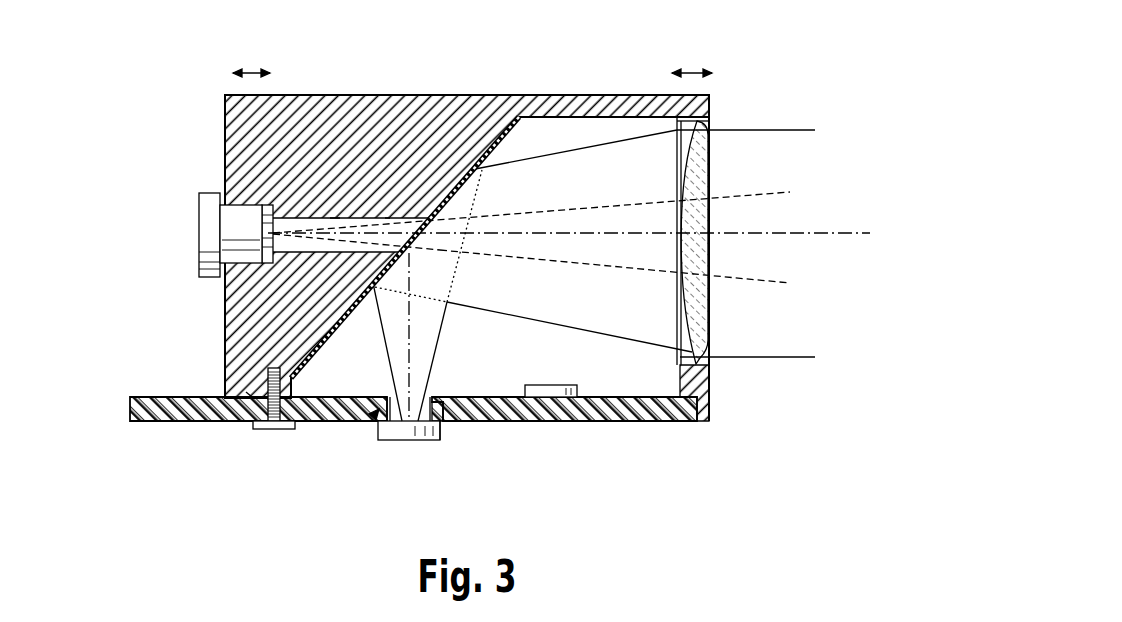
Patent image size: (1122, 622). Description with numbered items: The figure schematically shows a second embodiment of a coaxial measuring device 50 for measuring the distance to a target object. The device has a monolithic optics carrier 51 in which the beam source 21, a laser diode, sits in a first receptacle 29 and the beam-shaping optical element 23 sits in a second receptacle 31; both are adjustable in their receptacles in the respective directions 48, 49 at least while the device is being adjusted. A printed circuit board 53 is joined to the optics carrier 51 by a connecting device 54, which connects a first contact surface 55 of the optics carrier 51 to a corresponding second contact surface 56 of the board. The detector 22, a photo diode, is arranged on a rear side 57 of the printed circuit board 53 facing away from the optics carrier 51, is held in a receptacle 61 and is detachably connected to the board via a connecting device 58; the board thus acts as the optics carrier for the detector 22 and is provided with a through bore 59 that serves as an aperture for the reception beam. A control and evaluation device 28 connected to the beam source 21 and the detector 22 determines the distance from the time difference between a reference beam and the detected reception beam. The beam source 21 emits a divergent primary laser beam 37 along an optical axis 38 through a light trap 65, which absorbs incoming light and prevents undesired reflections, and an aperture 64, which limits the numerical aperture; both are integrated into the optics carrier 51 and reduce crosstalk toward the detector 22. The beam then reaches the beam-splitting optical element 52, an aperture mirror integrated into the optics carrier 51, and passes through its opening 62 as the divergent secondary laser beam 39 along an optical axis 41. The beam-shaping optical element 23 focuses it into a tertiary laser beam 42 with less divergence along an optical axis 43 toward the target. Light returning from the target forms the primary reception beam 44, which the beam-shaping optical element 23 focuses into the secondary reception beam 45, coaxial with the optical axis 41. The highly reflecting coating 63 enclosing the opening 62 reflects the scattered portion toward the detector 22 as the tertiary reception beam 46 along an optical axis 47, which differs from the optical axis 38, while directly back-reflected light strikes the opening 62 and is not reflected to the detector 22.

The beam source 21 is at (207, 222).
The detector 22 is at (407, 437).
The beam-shaping optical element 23 is at (703, 308).
The control and evaluation device 28 is at (550, 390).
The first receptacle 29 is at (240, 200).
The second receptacle 31 is at (695, 380).
The primary laser beam 37 is at (313, 228).
The optical axis 38 is at (345, 235).
The secondary laser beam 39 is at (630, 275).
The optical axis 41 is at (573, 235).
The tertiary laser beam 42 is at (758, 195).
The optical axis 43 is at (856, 233).
The primary reception beam 44 is at (772, 357).
The secondary reception beam 45 is at (595, 145).
The tertiary reception beam 46 is at (445, 327).
The optical axis 47 is at (408, 358).
The direction 48 is at (249, 70).
The direction 49 is at (690, 70).
The coaxial measuring device 50 is at (158, 166).
The optics carrier 51 is at (408, 108).
The beam-splitting optical element 52 is at (430, 245).
The printed circuit board 53 is at (185, 407).
The connecting device 54 is at (275, 422).
The first contact surface 55 is at (237, 398).
The second contact surface 56 is at (248, 393).
The rear side 57 is at (618, 422).
The connecting device 58 is at (448, 422).
The through bore 59 is at (440, 405).
The receptacle 61 is at (372, 422).
The opening 62 is at (418, 217).
The coating 63 is at (480, 190).
The aperture 64 is at (288, 261).
The light trap 65 is at (335, 217).